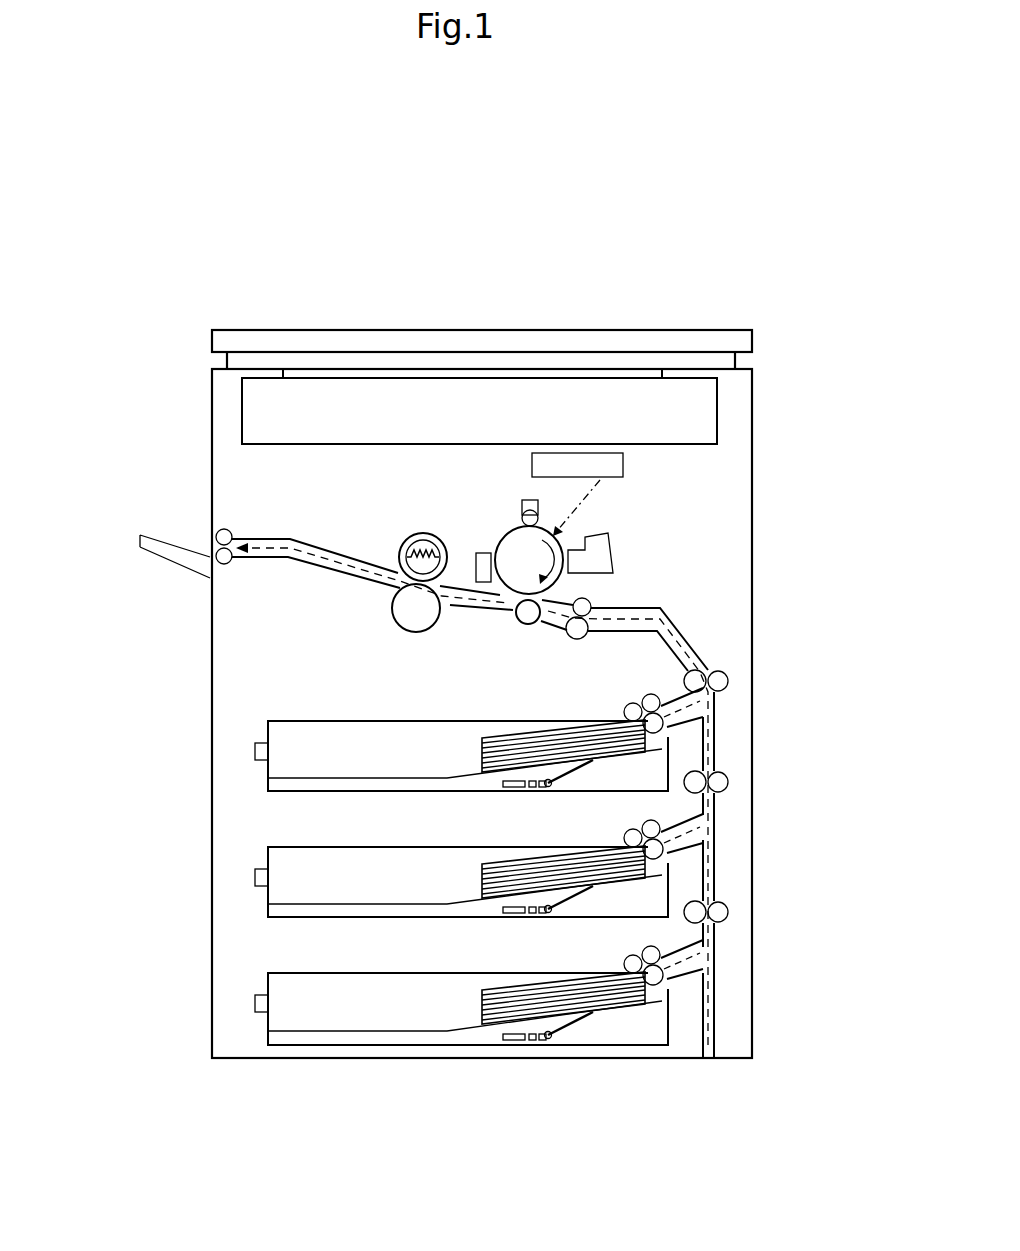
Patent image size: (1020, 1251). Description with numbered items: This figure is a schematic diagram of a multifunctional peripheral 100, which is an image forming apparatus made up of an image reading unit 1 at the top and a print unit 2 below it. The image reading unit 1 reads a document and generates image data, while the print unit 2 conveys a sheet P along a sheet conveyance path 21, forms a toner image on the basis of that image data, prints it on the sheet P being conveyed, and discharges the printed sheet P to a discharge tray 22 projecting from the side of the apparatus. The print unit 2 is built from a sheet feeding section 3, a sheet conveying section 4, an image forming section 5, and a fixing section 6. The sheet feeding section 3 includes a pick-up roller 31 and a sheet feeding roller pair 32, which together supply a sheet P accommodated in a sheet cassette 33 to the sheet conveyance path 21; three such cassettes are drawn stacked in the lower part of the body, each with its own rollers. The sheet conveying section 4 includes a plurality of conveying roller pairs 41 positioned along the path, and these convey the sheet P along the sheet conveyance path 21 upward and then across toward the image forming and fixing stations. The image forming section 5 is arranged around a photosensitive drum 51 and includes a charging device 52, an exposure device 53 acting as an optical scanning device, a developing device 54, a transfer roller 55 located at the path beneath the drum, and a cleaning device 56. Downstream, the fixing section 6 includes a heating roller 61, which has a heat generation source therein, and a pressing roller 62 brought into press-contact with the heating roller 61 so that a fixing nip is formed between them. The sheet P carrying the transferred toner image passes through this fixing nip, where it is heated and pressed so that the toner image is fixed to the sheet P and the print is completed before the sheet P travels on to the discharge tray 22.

The multifunctional peripheral 100 is at (228, 307).
The image reading unit 1 is at (724, 408).
The print unit 2 is at (724, 543).
The sheet feeding section 3 is at (600, 706).
The sheet conveying section 4 is at (726, 664).
The image forming section 5 is at (630, 536).
The fixing section 6 is at (372, 610).
The sheet conveyance path 21 is at (670, 620).
The discharge tray 22 is at (148, 535).
The pick-up roller 31 is at (631, 704).
The sheet feeding roller pair 32 is at (650, 695).
The sheet cassette 33 is at (374, 720).
The conveying roller pair 41 is at (228, 528).
The photosensitive drum 51 is at (508, 535).
The charging device 52 is at (527, 499).
The exposure device 53 is at (625, 465).
The developing device 54 is at (595, 540).
The transfer roller 55 is at (525, 624).
The cleaning device 56 is at (482, 553).
The heating roller 61 is at (427, 534).
The pressing roller 62 is at (416, 632).
The sheet P is at (484, 735).